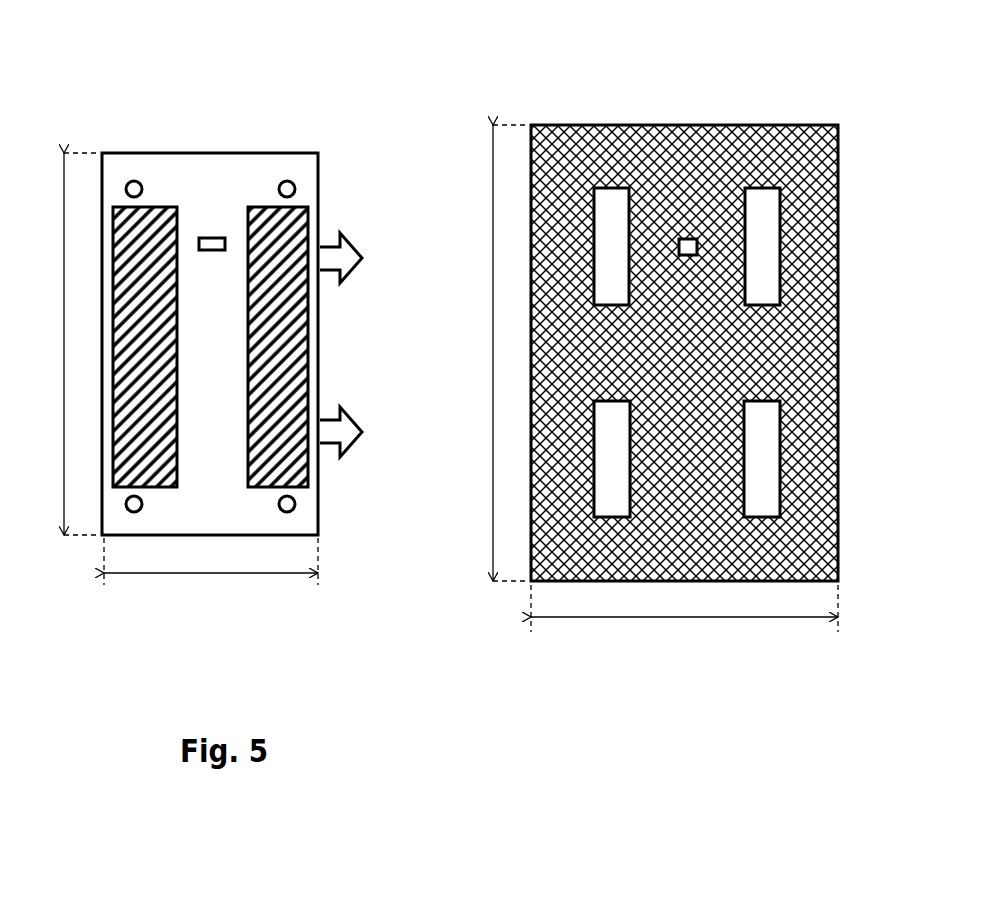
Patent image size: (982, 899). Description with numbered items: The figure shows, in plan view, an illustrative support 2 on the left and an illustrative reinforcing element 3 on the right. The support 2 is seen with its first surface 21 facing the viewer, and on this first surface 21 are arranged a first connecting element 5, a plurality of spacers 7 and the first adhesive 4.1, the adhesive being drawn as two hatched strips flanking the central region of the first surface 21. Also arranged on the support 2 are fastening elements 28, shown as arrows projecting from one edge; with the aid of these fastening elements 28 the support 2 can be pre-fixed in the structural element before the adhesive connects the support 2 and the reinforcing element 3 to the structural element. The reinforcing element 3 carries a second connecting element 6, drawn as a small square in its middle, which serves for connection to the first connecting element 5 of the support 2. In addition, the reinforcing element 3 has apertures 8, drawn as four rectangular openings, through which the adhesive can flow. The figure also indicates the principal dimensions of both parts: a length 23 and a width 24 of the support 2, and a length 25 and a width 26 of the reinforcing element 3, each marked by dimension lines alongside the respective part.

The support 2 is at (185, 103).
The reinforcing element 3 is at (662, 80).
The first adhesive 4.1 is at (290, 338).
The first connecting element 5 is at (212, 238).
The second connecting element 6 is at (688, 238).
The spacers 7 is at (296, 189).
The apertures 8 is at (762, 222).
The first surface 21 is at (221, 364).
The length of the support 23 is at (58, 344).
The width of the support 24 is at (211, 577).
The length of the reinforcing element 25 is at (489, 353).
The width of the reinforcing element 26 is at (684, 621).
The fastening elements 28 is at (346, 258).